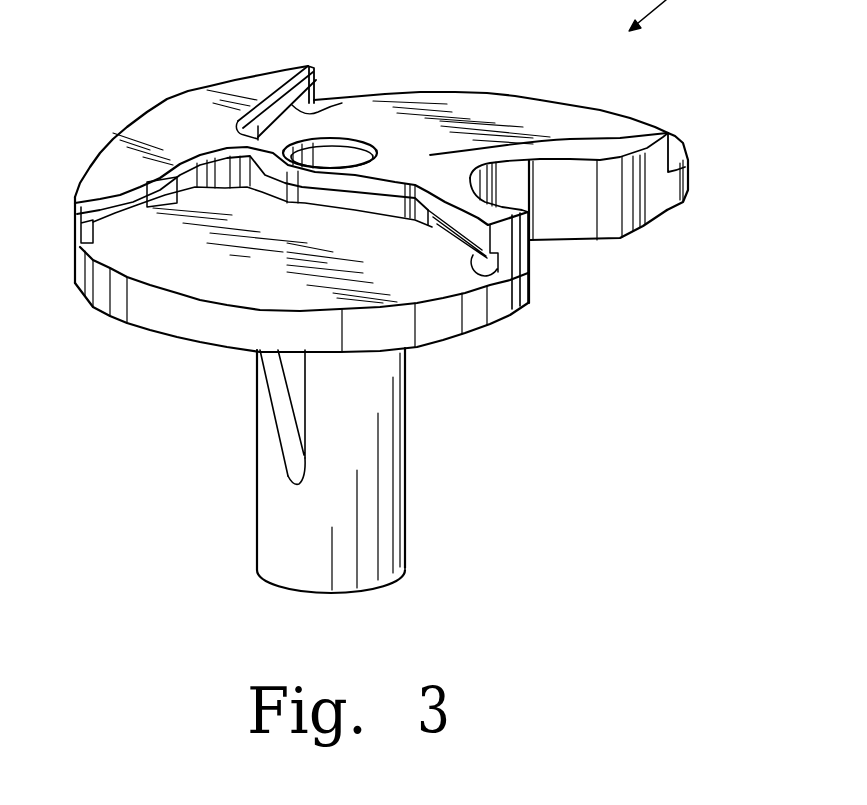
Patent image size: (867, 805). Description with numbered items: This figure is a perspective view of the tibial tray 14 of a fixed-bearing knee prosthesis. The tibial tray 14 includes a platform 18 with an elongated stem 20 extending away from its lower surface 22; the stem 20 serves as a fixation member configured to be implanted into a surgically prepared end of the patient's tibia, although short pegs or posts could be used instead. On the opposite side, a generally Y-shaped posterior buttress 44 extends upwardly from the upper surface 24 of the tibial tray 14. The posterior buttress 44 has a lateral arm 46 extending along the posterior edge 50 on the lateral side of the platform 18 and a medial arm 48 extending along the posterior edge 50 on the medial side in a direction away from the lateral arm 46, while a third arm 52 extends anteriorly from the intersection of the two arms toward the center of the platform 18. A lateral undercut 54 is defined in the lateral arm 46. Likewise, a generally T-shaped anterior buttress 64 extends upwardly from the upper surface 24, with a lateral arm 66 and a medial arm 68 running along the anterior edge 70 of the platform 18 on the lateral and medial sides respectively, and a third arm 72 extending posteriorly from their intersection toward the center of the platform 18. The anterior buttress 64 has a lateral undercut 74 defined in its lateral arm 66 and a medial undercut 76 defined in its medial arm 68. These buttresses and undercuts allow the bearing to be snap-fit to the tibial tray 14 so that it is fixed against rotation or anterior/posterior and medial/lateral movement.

The tibial tray 14 is at (628, 90).
The platform 18 is at (623, 123).
The elongated stem 20 is at (383, 522).
The lower surface 22 is at (437, 343).
The upper surface 24 is at (507, 108).
The posterior buttress 44 is at (571, 157).
The lateral arm 46 is at (435, 233).
The medial arm 48 is at (650, 127).
The posterior edge 50 is at (568, 220).
The third arm 52 is at (427, 157).
The lateral undercut 54 is at (500, 276).
The anterior buttress 64 is at (194, 121).
The lateral arm 66 is at (100, 172).
The medial arm 68 is at (273, 82).
The anterior edge 70 is at (153, 115).
The third arm 72 is at (254, 168).
The lateral undercut 74 is at (133, 203).
The medial undercut 76 is at (323, 105).